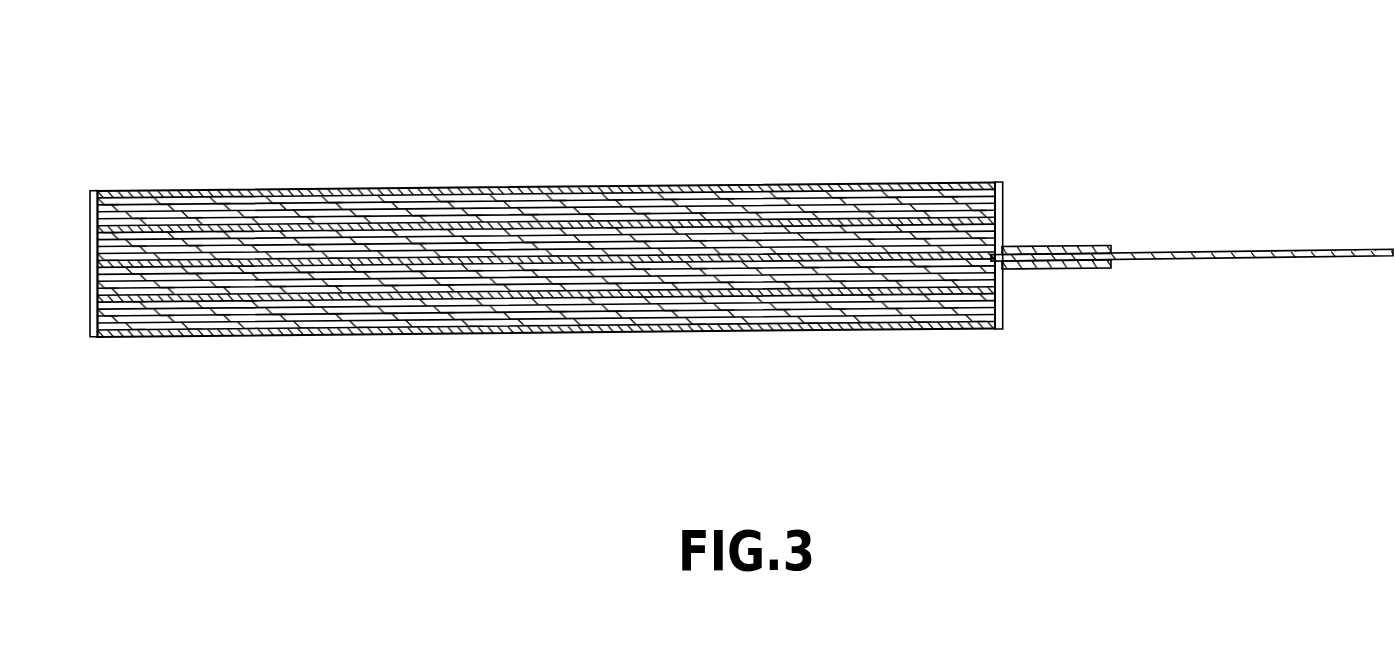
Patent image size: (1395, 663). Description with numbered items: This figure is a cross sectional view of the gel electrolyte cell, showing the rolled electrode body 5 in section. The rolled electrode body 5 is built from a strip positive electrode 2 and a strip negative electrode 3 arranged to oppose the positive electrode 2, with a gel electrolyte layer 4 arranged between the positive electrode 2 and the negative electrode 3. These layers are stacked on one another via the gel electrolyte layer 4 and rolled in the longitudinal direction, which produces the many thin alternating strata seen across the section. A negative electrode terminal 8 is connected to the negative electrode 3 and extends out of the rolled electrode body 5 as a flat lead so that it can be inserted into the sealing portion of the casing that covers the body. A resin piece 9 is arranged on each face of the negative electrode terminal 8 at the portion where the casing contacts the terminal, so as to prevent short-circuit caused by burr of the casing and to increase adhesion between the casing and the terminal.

The positive electrode 2 is at (465, 208).
The negative electrode 3 is at (640, 189).
The gel electrolyte layer 4 is at (557, 198).
The rolled electrode body 5 is at (741, 192).
The negative electrode terminal 8 is at (1346, 250).
The resin piece 9 is at (1048, 248).